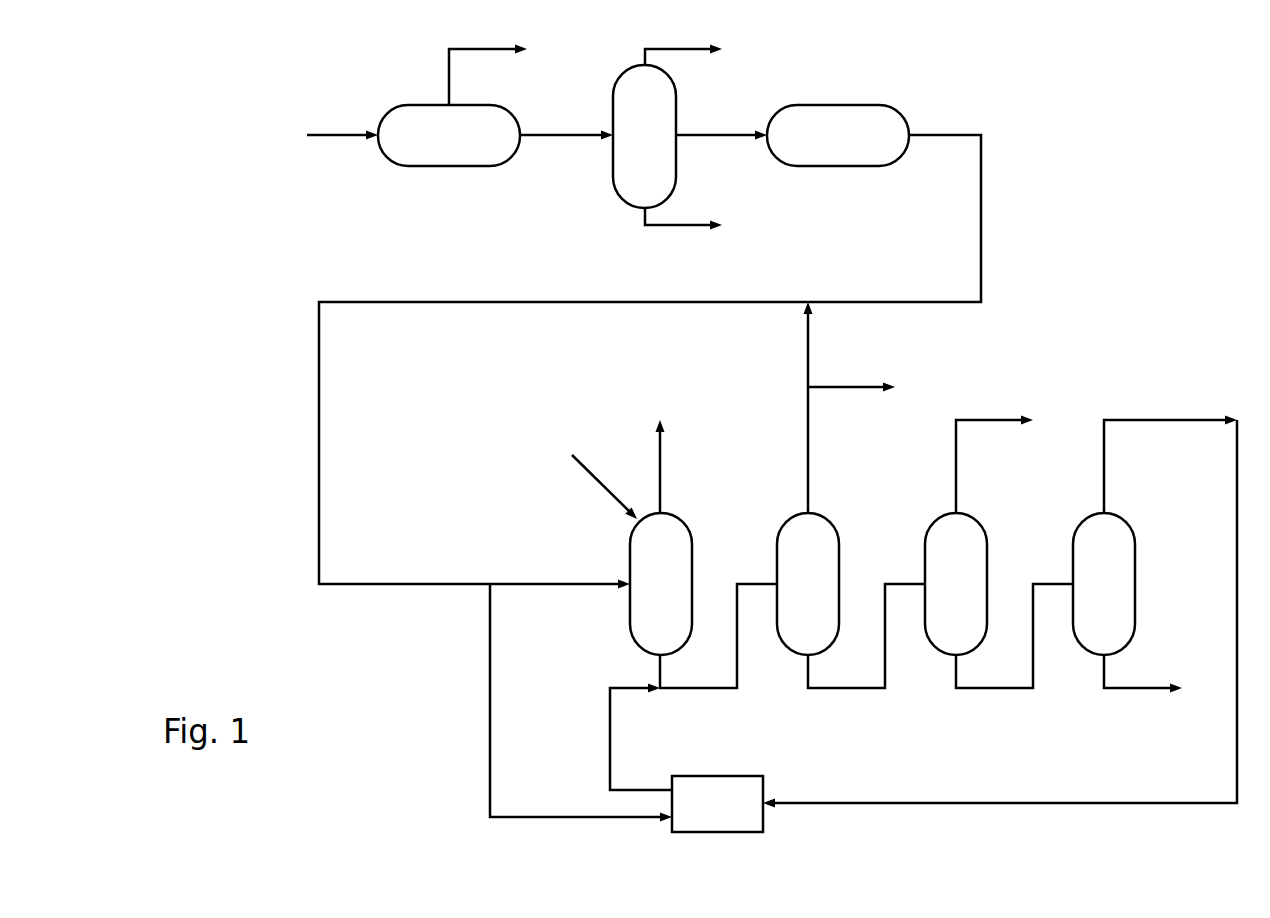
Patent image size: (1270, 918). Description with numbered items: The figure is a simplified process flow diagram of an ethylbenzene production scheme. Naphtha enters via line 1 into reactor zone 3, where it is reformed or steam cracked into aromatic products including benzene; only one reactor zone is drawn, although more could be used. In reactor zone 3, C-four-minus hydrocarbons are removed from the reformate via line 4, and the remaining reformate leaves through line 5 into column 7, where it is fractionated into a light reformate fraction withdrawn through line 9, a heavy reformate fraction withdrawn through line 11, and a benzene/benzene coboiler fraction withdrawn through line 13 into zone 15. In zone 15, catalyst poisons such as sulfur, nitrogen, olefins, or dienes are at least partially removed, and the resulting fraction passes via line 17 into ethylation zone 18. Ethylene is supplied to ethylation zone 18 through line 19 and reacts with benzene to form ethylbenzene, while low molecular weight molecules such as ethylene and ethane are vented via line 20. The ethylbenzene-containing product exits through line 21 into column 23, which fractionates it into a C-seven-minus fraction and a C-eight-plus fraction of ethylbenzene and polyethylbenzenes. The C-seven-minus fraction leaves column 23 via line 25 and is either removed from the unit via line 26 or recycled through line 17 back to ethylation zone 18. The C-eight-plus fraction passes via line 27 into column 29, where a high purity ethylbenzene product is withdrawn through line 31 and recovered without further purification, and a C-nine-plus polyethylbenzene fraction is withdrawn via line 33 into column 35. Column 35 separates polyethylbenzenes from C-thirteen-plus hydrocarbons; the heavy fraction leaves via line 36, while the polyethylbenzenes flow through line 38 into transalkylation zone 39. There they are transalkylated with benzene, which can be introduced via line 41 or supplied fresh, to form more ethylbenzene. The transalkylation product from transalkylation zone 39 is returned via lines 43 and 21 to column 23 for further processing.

The line 1 is at (353, 132).
The reactor zone 3 is at (466, 167).
The line 4 is at (478, 48).
The line 5 is at (586, 132).
The column 7 is at (678, 108).
The line 9 is at (678, 48).
The line 11 is at (688, 222).
The line 13 is at (740, 132).
The zone 15 is at (838, 105).
The line 17 is at (970, 132).
The ethylation zone 18 is at (678, 512).
The line 19 is at (597, 490).
The line 20 is at (663, 460).
The line 21 is at (697, 688).
The column 23 is at (827, 512).
The line 25 is at (810, 452).
The line 26 is at (843, 385).
The line 27 is at (845, 688).
The column 29 is at (975, 512).
The line 31 is at (990, 420).
The line 33 is at (995, 688).
The column 35 is at (1123, 512).
The line 36 is at (1130, 688).
The line 38 is at (1138, 420).
The transalkylation zone 39 is at (775, 778).
The line 41 is at (490, 690).
The line 43 is at (610, 733).